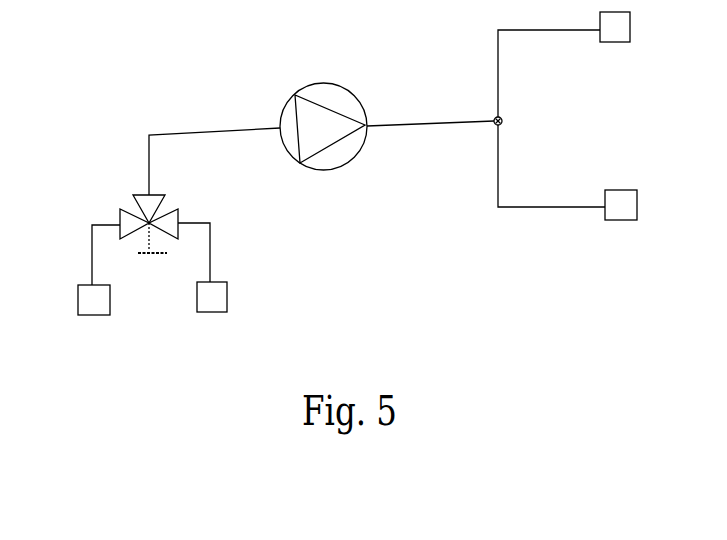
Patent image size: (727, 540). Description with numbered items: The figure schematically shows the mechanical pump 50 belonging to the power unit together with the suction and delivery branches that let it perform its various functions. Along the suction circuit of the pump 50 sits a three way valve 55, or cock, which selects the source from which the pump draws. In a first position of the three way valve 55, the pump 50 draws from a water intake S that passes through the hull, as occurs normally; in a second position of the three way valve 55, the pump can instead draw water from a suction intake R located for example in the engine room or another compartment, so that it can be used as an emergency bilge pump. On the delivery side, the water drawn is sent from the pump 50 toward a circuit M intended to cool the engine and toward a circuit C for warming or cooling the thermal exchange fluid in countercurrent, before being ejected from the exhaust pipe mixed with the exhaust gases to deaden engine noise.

The three way valve 55 is at (123, 210).
The mechanical pump 50 is at (333, 165).
The circuit M is at (613, 30).
The circuit C is at (625, 207).
The suction intake R is at (93, 302).
The water intake S is at (212, 297).